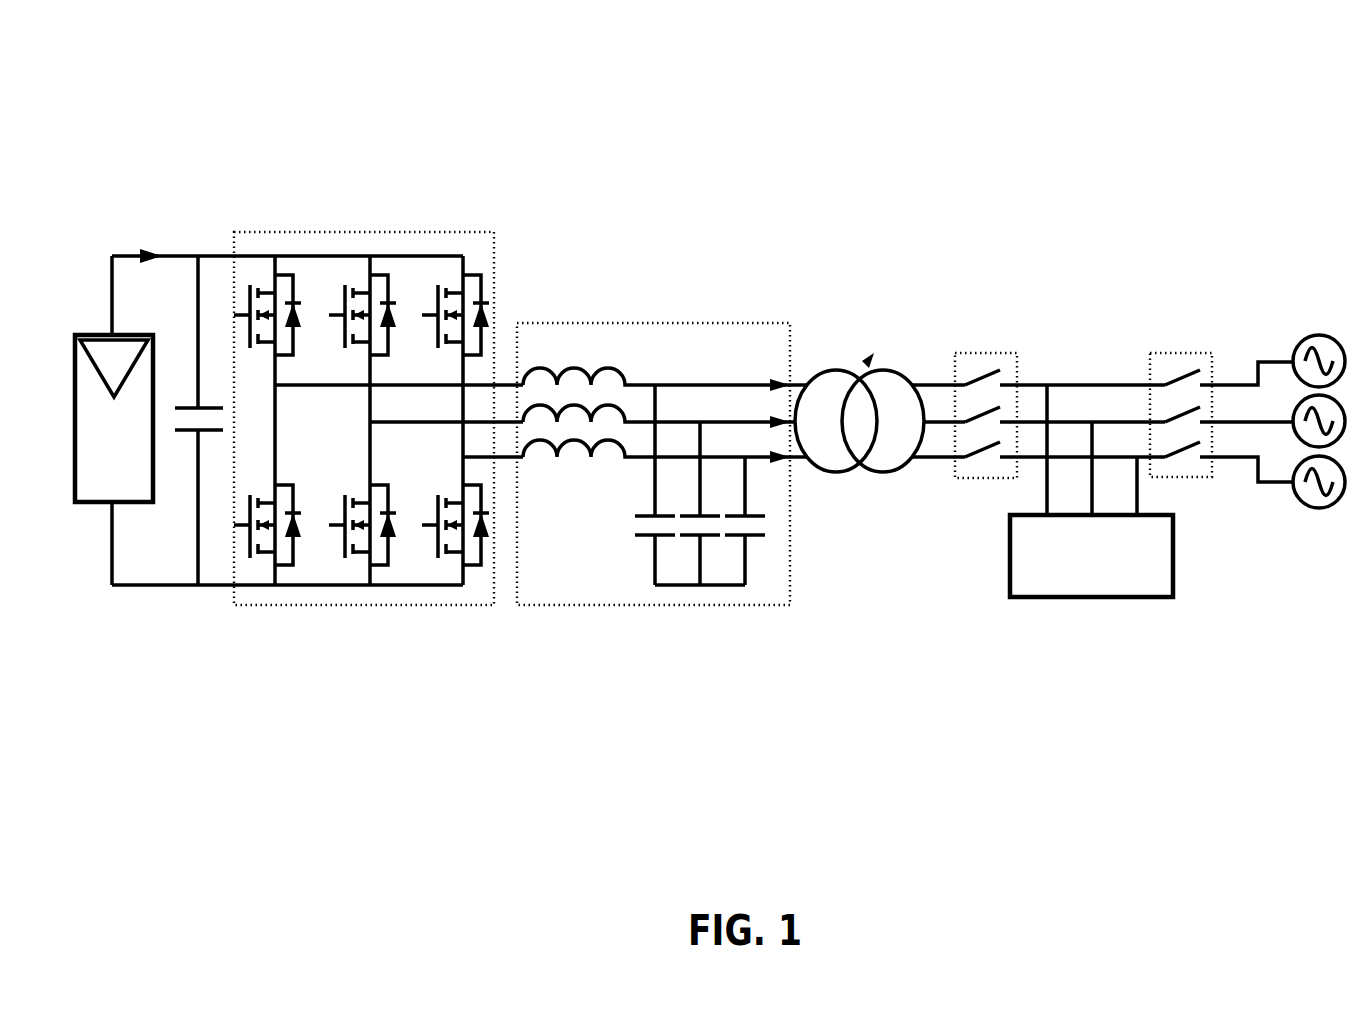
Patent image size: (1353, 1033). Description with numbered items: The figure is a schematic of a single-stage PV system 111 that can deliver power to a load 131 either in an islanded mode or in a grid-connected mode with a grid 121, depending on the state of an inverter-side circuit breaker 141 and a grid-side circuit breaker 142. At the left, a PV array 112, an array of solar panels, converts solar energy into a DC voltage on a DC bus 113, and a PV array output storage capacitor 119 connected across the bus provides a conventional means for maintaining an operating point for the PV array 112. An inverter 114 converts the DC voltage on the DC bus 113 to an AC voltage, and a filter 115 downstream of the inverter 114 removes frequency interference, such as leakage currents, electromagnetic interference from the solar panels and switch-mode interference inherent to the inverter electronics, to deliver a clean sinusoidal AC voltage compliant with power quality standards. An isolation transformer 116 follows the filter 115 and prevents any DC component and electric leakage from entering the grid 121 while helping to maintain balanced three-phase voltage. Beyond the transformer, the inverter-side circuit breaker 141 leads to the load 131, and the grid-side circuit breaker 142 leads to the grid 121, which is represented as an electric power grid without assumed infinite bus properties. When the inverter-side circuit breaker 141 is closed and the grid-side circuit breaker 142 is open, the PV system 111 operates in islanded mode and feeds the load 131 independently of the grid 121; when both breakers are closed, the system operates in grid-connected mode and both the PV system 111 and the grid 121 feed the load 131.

The single-stage PV system 111 is at (258, 78).
The PV array 112 is at (95, 338).
The DC bus 113 is at (197, 195).
The inverter 114 is at (410, 228).
The filter 115 is at (698, 318).
The isolation transformer 116 is at (878, 292).
The PV array output storage capacitor 119 is at (190, 406).
The grid 121 is at (1305, 292).
The load 131 is at (1090, 603).
The inverter-side circuit breaker 141 is at (995, 350).
The grid-side circuit breaker 142 is at (1185, 350).